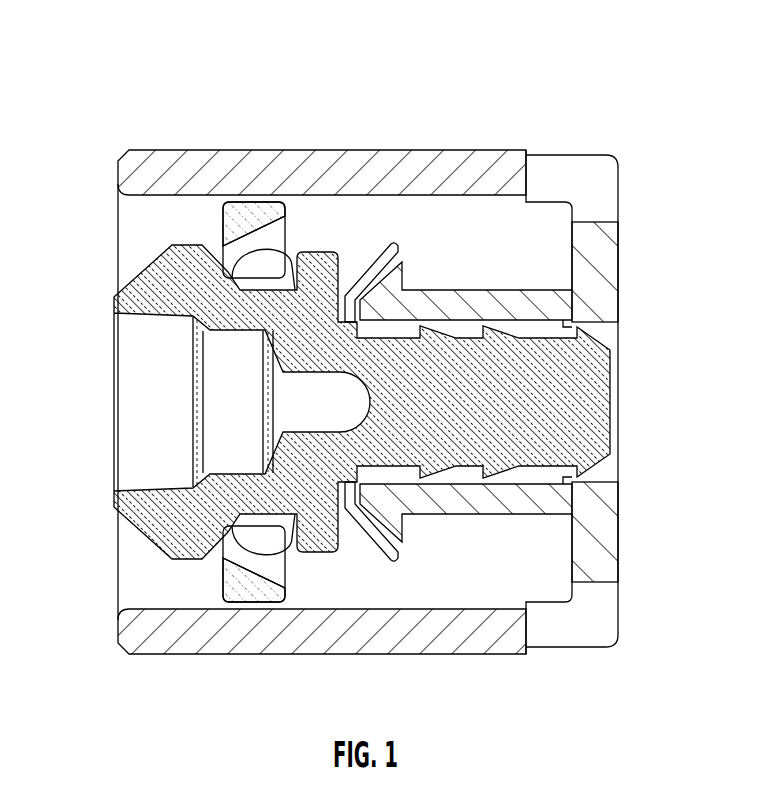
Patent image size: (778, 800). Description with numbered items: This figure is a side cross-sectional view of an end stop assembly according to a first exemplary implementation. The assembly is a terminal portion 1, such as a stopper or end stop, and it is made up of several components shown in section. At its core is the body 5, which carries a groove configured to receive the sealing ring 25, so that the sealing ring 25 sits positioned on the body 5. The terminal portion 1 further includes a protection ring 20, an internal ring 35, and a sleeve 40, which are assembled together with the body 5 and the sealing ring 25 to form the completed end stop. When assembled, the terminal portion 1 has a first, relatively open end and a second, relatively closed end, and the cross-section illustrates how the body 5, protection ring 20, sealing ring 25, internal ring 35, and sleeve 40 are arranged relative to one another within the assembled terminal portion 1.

The terminal portion 1 is at (113, 90).
The body 5 is at (114, 290).
The protection ring 20 is at (252, 212).
The sealing ring 25 is at (283, 262).
The internal ring 35 is at (393, 562).
The sleeve 40 is at (606, 258).